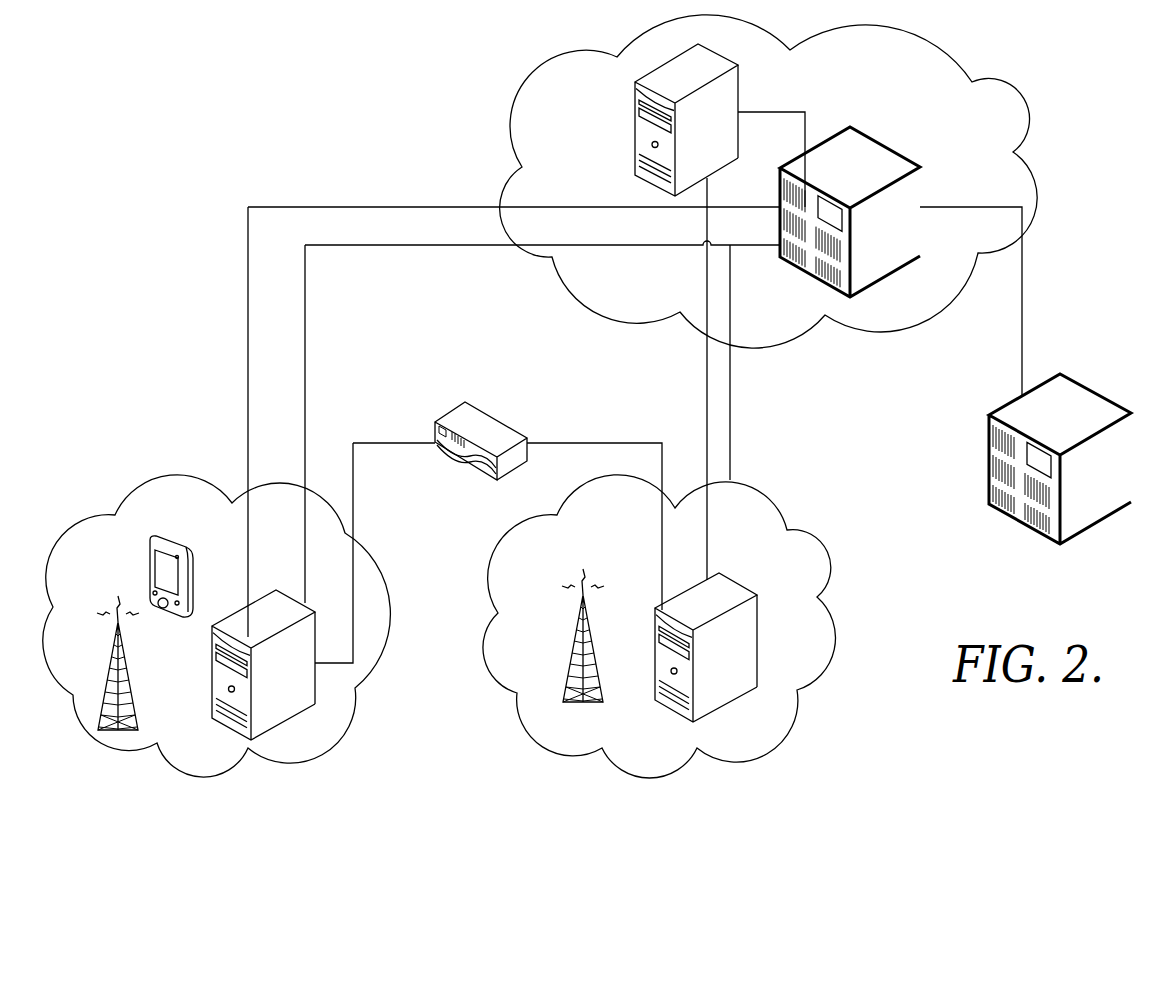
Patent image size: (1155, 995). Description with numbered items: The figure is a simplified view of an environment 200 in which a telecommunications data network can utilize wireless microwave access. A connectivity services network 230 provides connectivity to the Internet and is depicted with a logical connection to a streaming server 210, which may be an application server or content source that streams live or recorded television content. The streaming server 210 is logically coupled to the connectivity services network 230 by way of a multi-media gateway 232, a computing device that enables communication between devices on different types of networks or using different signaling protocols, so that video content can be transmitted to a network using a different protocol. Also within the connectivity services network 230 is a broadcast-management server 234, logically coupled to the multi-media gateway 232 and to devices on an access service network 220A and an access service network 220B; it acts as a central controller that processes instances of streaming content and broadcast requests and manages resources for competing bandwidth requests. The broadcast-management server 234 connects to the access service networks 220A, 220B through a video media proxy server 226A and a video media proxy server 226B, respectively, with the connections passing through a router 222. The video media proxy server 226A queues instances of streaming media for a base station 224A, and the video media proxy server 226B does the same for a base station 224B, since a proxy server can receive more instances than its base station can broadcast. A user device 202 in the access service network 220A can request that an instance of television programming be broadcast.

The environment 200 is at (122, 142).
The device 202 is at (178, 538).
The streaming server 210 is at (991, 445).
The access service network 220A is at (180, 473).
The access service network 220B is at (828, 657).
The router 222 is at (488, 413).
The base station 224A is at (108, 677).
The base station 224B is at (567, 650).
The video media proxy server 226A is at (212, 675).
The video media proxy server 226B is at (757, 638).
The connectivity services network 230 is at (1040, 192).
The multi-media gateway 232 is at (887, 150).
The broadcast-management server 234 is at (738, 82).